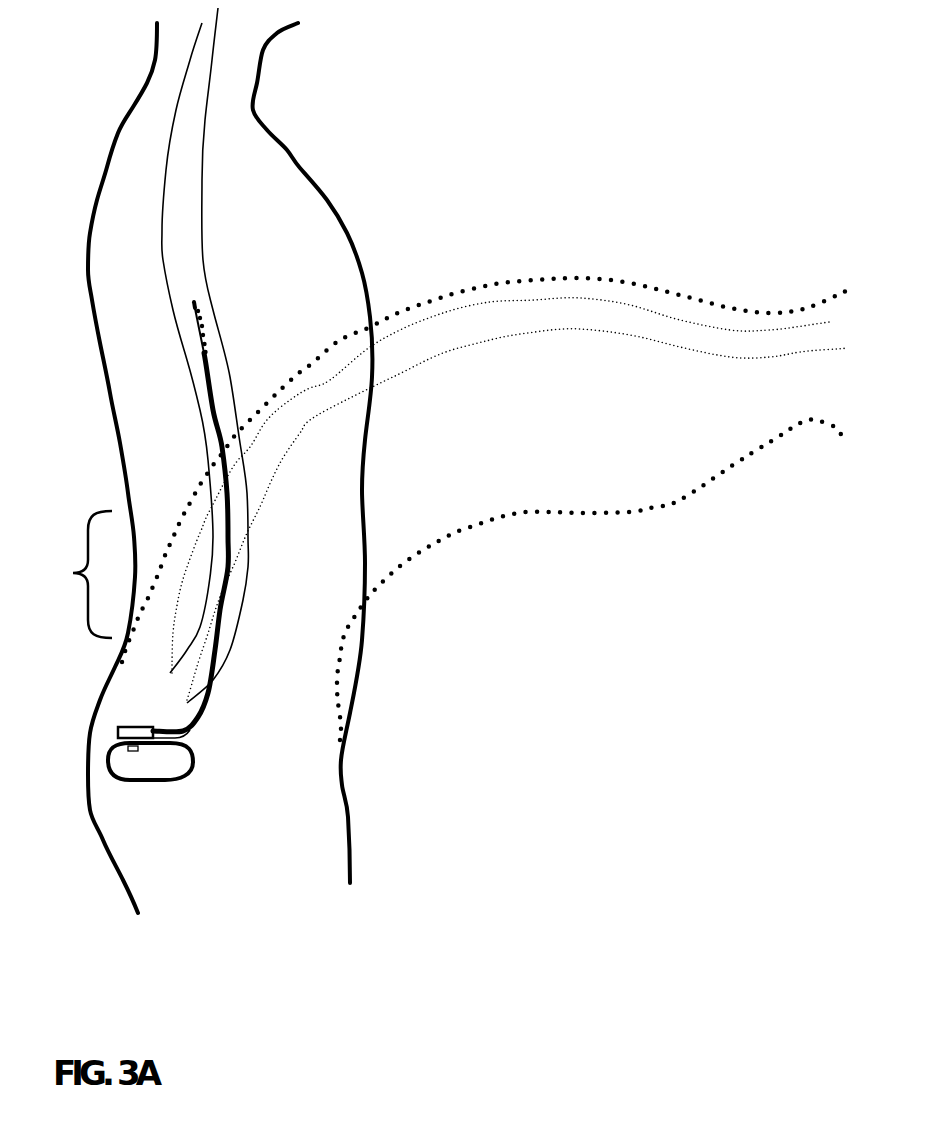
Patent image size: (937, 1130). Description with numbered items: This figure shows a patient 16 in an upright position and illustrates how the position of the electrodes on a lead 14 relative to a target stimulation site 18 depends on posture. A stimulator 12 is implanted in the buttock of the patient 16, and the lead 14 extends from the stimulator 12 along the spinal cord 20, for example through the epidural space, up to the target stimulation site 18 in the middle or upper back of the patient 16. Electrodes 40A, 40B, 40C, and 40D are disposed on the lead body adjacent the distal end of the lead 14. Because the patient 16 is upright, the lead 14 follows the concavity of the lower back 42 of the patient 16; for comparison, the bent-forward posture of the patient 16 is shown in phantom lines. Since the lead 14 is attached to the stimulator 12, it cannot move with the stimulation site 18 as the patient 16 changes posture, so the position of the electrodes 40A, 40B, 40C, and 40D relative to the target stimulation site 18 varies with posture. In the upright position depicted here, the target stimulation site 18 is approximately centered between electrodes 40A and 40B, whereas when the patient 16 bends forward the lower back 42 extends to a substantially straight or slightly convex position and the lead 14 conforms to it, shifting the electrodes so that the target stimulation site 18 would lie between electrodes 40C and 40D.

The stimulator 12 is at (110, 746).
The lead 14 is at (207, 388).
The patient 16 is at (302, 165).
The target stimulation site 18 is at (230, 327).
The spinal cord 20 is at (163, 255).
The electrode 40A is at (203, 353).
The electrode 40B is at (202, 346).
The electrode 40C is at (200, 338).
The electrode 40D is at (195, 330).
The lower back 42 is at (76, 574).